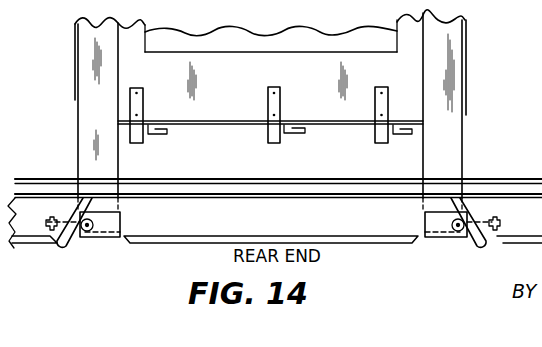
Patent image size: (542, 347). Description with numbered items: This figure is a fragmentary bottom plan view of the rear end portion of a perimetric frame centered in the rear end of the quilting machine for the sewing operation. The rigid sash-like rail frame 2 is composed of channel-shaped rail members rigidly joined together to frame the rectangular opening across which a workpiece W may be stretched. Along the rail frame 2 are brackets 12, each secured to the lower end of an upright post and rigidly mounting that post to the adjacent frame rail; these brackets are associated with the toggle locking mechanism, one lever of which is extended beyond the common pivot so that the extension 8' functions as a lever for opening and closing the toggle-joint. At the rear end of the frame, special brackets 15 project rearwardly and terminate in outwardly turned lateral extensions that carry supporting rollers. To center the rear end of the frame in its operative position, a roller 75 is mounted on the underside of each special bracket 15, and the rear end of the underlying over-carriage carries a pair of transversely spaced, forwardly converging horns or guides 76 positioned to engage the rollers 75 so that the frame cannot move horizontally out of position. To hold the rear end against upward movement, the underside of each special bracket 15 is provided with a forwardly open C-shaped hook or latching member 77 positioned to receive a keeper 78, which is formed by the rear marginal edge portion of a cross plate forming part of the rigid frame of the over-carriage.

The workpiece W is at (279, 38).
The rail frame 2 is at (466, 42).
The bracket 12 is at (143, 100).
The lever extension 8' is at (270, 136).
The special bracket 15 is at (105, 151).
The latching member 77 is at (110, 223).
The keeper 78 is at (231, 222).
The roller 75 is at (88, 237).
The guide 76 is at (60, 250).